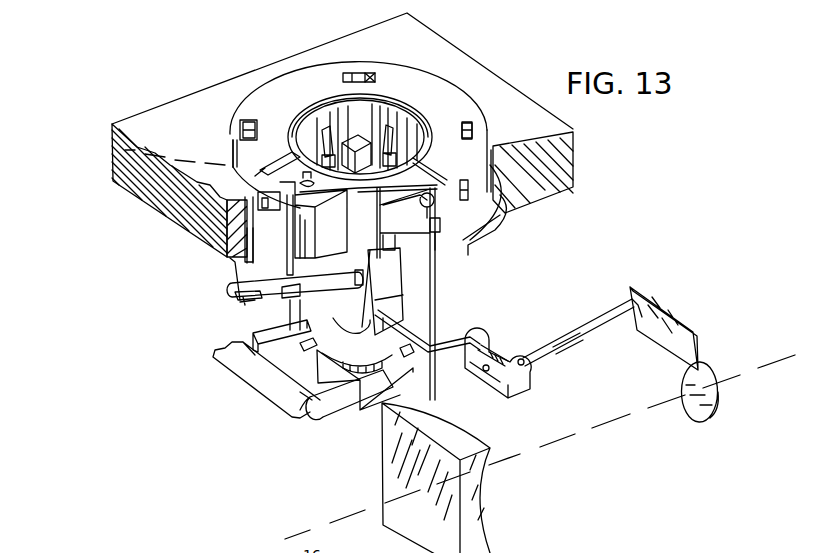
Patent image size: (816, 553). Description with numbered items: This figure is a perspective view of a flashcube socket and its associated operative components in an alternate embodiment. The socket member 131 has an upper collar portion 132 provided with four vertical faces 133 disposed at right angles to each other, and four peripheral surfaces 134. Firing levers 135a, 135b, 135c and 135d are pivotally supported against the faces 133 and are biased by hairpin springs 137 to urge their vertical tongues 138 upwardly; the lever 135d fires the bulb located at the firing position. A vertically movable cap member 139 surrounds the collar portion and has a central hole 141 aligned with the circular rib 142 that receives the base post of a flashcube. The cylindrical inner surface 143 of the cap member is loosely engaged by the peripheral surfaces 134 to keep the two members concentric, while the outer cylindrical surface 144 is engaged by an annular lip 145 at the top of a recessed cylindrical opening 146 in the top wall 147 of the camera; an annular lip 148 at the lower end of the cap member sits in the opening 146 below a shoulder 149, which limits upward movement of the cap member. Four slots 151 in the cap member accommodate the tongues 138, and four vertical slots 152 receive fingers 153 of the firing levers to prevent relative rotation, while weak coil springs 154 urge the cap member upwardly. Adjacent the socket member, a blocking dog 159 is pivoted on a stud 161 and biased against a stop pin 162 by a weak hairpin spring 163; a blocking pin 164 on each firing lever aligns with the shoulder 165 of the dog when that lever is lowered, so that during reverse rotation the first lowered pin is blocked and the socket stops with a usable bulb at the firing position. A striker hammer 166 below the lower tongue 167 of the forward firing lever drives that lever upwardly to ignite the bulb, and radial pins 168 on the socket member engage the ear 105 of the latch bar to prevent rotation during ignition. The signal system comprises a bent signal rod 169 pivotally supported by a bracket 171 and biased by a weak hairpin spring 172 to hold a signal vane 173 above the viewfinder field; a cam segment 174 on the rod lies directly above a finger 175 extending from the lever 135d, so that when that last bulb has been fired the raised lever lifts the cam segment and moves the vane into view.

The ear of the latch bar 105 is at (283, 358).
The socket member 131 is at (433, 325).
The upper collar portion 132 is at (412, 166).
The vertical faces 133 is at (440, 240).
The peripheral surfaces 134 is at (300, 250).
The firing lever 135a is at (477, 125).
The firing lever 135b is at (348, 73).
The firing lever 135c is at (240, 122).
The firing lever 135d is at (395, 250).
The hairpin springs 137 is at (406, 294).
The vertical tongues 138 is at (350, 212).
The cap member 139 is at (452, 86).
The central hole 141 is at (385, 95).
The circular rib 142 is at (300, 112).
The cylindrical inner surface 143 is at (272, 218).
The outer cylindrical surface 144 is at (233, 155).
The annular lip 145 is at (250, 190).
The recessed cylindrical opening 146 is at (215, 236).
The top wall 147 is at (118, 125).
The annular lip 148 is at (247, 255).
The shoulder 149 is at (235, 250).
The slots 151 is at (372, 70).
The vertical slots 152 is at (482, 205).
The fingers 153 is at (468, 238).
The coil springs 154 is at (300, 150).
The blocking dog 159 is at (325, 280).
The stud 161 is at (265, 322).
The stop pin 162 is at (243, 305).
The hairpin spring 163 is at (238, 297).
The blocking pin 164 is at (378, 275).
The shoulder 165 is at (358, 272).
The striker hammer 166 is at (325, 415).
The lower tongue 167 is at (378, 308).
The radial pins 168 is at (325, 362).
The signal rod 169 is at (548, 372).
The bracket 171 is at (508, 398).
The hairpin spring 172 is at (528, 350).
The signal vane 173 is at (655, 315).
The cam segment 174 is at (333, 318).
The finger 175 is at (375, 342).